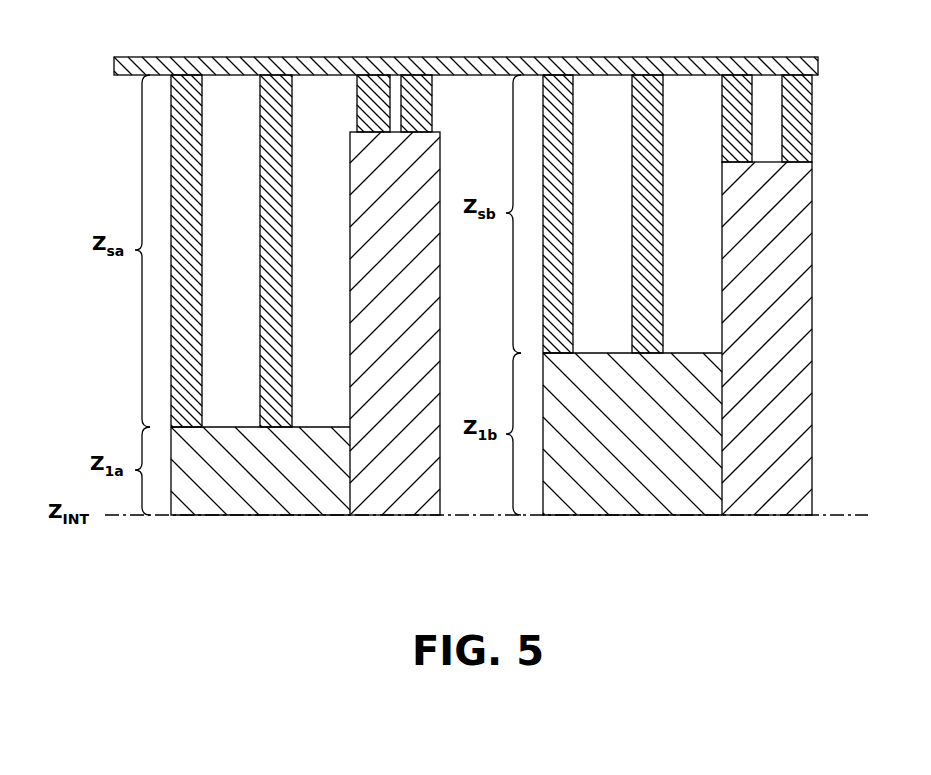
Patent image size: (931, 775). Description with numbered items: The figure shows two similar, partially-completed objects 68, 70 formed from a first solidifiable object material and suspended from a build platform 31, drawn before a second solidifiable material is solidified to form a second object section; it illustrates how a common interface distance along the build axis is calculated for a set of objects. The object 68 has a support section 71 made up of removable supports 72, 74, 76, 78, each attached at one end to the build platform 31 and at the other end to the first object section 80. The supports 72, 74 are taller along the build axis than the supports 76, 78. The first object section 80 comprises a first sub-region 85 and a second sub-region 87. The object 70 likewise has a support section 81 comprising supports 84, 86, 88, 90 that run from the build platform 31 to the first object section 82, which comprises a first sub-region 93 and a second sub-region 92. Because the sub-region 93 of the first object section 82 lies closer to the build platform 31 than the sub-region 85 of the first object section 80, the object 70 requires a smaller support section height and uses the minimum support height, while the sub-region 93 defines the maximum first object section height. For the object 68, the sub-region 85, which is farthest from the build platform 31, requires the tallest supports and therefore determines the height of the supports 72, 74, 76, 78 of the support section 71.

The build platform 31 is at (460, 57).
The object 68 is at (295, 309).
The object 70 is at (680, 305).
The support section 71 is at (170, 128).
The removable support 72 is at (186, 100).
The removable support 74 is at (282, 200).
The removable support 76 is at (367, 115).
The removable support 78 is at (432, 108).
The first object section 80 is at (220, 487).
The support section 81 is at (545, 145).
The first object section 82 is at (623, 482).
The support 84 is at (560, 105).
The first sub-region 85 is at (258, 468).
The support 86 is at (650, 240).
The second sub-region 87 is at (440, 310).
The support 88 is at (737, 97).
The support 90 is at (800, 120).
The second sub-region 92 is at (802, 248).
The first sub-region 93 is at (682, 475).